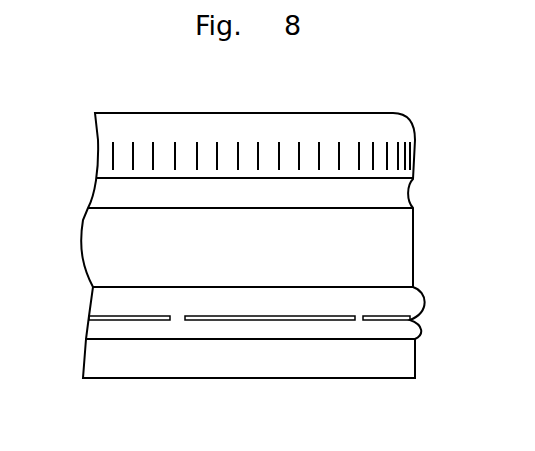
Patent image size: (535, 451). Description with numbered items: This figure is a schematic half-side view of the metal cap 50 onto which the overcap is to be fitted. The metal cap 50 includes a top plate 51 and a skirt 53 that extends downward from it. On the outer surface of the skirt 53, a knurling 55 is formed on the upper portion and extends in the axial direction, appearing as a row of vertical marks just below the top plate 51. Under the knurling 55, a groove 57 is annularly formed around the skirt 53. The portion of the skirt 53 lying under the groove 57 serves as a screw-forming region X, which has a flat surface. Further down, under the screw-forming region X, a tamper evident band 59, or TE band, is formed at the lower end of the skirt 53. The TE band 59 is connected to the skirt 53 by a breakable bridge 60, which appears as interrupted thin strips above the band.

The metal cap 50 is at (104, 98).
The top plate 51 is at (292, 113).
The skirt 53 is at (115, 250).
The knurling 55 is at (387, 155).
The groove 57 is at (410, 190).
The screw-forming region X is at (396, 255).
The tamper evident band 59 is at (396, 363).
The breakable bridge 60 is at (175, 320).